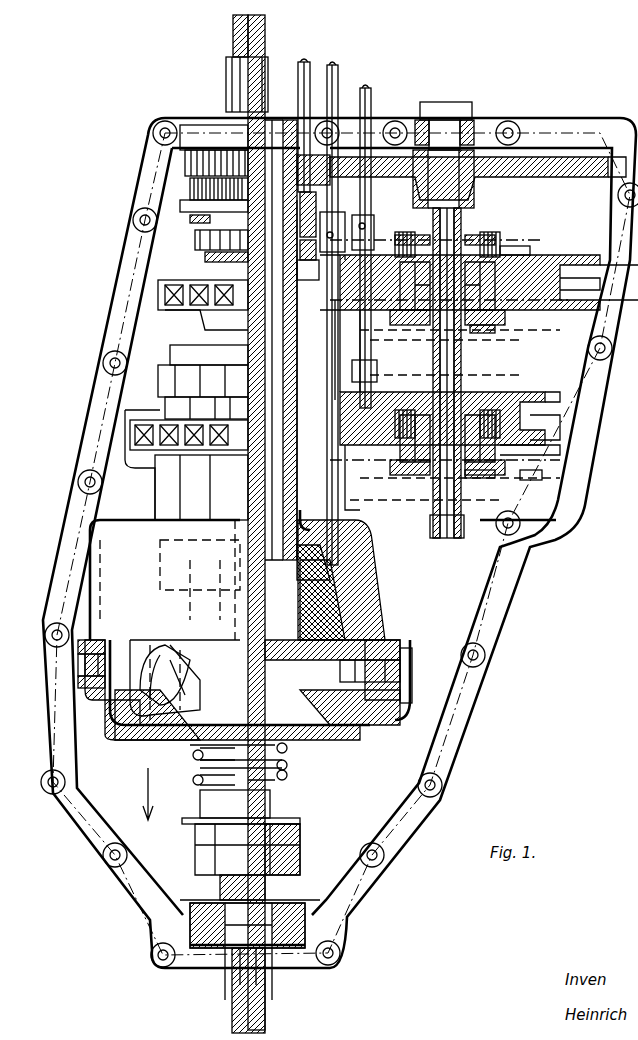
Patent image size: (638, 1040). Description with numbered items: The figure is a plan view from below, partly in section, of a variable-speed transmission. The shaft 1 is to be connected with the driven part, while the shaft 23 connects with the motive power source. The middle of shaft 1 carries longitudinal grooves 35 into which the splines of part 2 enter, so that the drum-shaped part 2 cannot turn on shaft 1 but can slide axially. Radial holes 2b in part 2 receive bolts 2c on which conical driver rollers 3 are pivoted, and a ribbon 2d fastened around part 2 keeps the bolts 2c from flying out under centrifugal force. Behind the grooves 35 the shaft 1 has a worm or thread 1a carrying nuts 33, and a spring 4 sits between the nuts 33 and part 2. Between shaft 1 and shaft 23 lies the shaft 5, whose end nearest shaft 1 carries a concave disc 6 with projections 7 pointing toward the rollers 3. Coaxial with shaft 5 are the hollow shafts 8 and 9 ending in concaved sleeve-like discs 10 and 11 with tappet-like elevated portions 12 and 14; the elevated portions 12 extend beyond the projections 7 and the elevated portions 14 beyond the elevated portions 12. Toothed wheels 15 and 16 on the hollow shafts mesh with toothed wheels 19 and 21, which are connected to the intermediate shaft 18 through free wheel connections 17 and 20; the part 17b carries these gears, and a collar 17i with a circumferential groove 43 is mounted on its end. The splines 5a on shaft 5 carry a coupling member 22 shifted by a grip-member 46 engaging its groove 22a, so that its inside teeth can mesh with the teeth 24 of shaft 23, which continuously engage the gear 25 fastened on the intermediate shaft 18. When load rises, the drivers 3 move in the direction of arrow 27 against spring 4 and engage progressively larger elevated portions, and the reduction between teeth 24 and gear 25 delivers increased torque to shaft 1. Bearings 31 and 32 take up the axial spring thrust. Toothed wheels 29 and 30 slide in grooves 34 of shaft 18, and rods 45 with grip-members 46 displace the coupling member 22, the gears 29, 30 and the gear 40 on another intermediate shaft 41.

The shaft 1 is at (262, 985).
The worm or thread 1a is at (275, 890).
The part 2 is at (85, 712).
The holes 2b is at (78, 645).
The bolts 2c is at (78, 666).
The ribbon 2d is at (78, 684).
The driver rollers 3 is at (95, 725).
The spring 4 is at (290, 768).
The shaft 5 is at (262, 128).
The splines 5a is at (230, 258).
The concave disc 6 is at (340, 640).
The projections 7 is at (150, 640).
The hollow shaft 8 is at (300, 270).
The hollow shaft 9 is at (158, 366).
The concaved sleeve-like disc 10 is at (330, 610).
The concaved sleeve-like disc 11 is at (350, 590).
The elevated portions 12 is at (165, 650).
The elevated portions 14 is at (118, 730).
The toothed wheel 15 is at (130, 433).
The toothed wheel 16 is at (158, 291).
The free wheel connection 17 is at (562, 426).
The part 17b is at (500, 248).
The collar 17i is at (505, 318).
The intermediate shaft 18 is at (446, 104).
The toothed wheel 19 is at (540, 450).
The free wheel connection 20 is at (520, 252).
The toothed wheel 21 is at (565, 290).
The coupling member 22 is at (190, 186).
The groove 22a is at (212, 250).
The shaft 23 is at (240, 88).
The teeth 24 is at (185, 162).
The gear 25 is at (530, 178).
The arrow 27 is at (147, 806).
The toothed wheel 29 is at (545, 402).
The toothed wheel 30 is at (560, 256).
The bearing 31 is at (300, 948).
The bearing 32 is at (335, 568).
The nuts 33 is at (302, 840).
The grooves 34 is at (455, 220).
The longitudinal grooves 35 is at (290, 748).
The gear 40 is at (165, 402).
The intermediate shaft 41 is at (310, 240).
The circumferential groove 43 is at (412, 235).
The rods 45 is at (318, 54).
The grip-members 46 is at (190, 225).